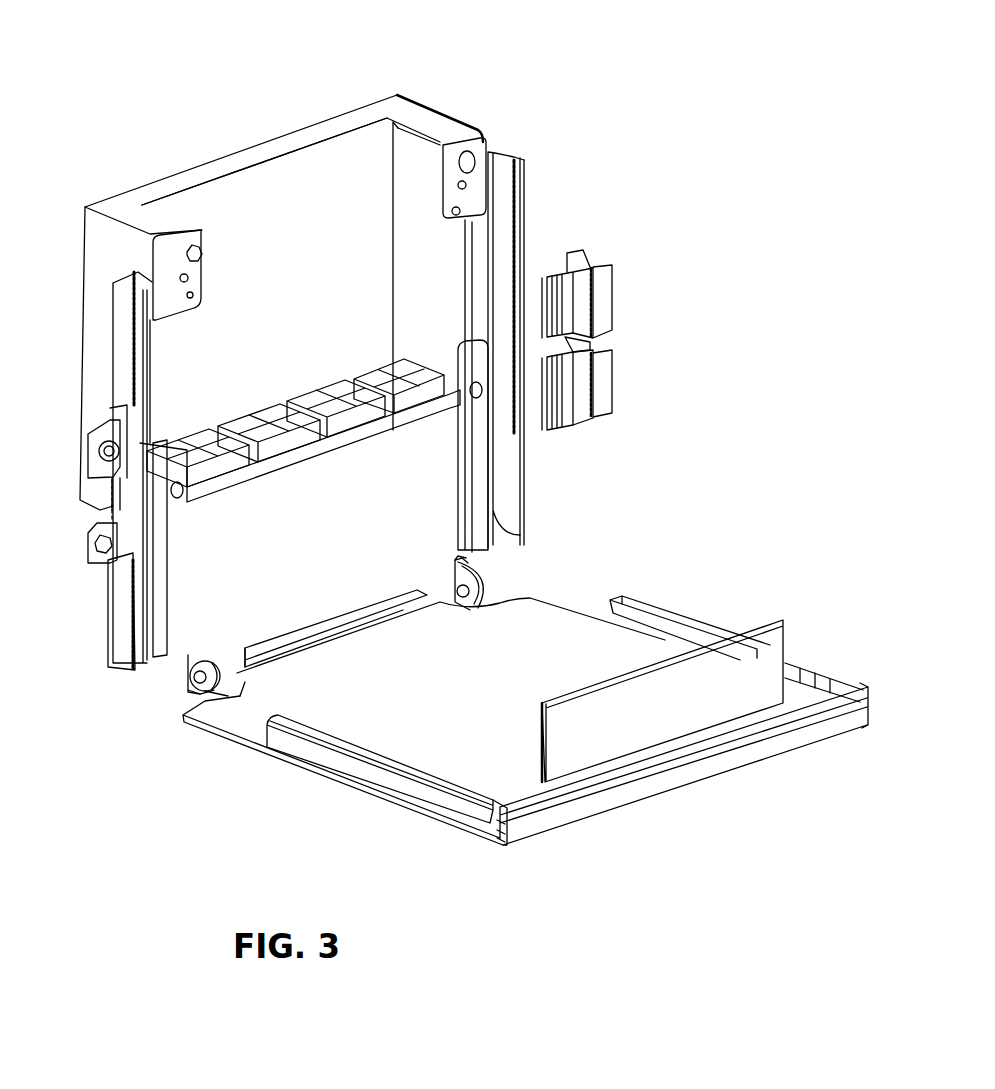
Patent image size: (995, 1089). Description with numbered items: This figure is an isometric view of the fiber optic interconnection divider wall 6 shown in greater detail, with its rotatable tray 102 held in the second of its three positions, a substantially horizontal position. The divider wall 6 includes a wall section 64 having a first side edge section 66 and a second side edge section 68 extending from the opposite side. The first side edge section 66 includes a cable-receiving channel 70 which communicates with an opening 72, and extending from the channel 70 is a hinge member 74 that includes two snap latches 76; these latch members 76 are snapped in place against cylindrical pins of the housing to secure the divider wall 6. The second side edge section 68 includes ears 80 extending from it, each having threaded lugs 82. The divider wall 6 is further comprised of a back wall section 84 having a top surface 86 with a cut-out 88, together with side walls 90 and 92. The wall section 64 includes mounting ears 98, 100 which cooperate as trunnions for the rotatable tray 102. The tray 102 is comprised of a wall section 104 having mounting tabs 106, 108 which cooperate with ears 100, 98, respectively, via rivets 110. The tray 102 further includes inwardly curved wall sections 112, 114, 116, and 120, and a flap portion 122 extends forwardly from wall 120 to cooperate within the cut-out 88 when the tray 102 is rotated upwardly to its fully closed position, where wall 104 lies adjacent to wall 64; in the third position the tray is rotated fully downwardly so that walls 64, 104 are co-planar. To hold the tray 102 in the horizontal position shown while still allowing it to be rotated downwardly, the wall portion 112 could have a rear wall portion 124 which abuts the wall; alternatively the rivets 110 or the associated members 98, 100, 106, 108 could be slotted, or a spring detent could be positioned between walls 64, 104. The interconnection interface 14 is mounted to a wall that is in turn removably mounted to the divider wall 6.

The fiber optic interconnection divider wall 6 is at (638, 110).
The interconnection interface 14 is at (297, 400).
The wall section 64 is at (362, 537).
The first side edge section 66 is at (527, 483).
The second side edge section 68 is at (127, 618).
The cable-receiving channel 70 is at (523, 540).
The opening 72 is at (483, 340).
The hinge member 74 is at (612, 303).
The snap latches 76 is at (574, 257).
The ears 80 is at (90, 473).
The threaded lugs 82 is at (99, 434).
The back wall section 84 is at (247, 236).
The top surface 86 is at (306, 134).
The cut-out 88 is at (372, 124).
The side wall 90 is at (455, 267).
The side wall 92 is at (132, 264).
The mounting ear 98 is at (200, 657).
The mounting ear 100 is at (473, 580).
The rotatable tray 102 is at (616, 803).
The wall section 104 is at (480, 741).
The mounting tab 106 is at (472, 610).
The mounting tab 108 is at (240, 690).
The rivets 110 is at (190, 690).
The inwardly curved wall section 112 is at (352, 615).
The inwardly curved wall section 114 is at (398, 767).
The inwardly curved wall section 116 is at (673, 620).
The inwardly curved wall section 120 is at (777, 737).
The flap portion 122 is at (688, 720).
The rear wall portion 124 is at (242, 655).